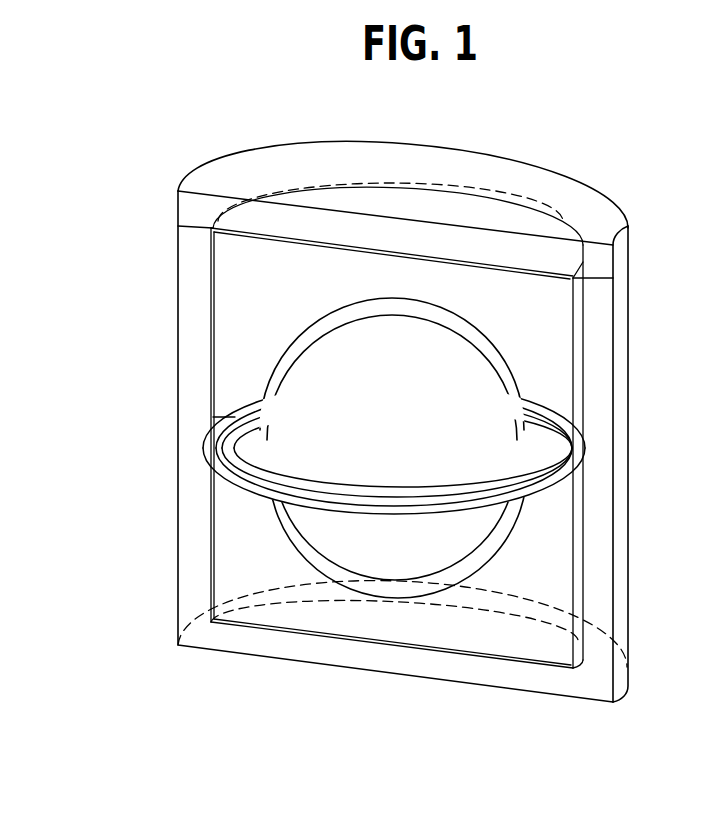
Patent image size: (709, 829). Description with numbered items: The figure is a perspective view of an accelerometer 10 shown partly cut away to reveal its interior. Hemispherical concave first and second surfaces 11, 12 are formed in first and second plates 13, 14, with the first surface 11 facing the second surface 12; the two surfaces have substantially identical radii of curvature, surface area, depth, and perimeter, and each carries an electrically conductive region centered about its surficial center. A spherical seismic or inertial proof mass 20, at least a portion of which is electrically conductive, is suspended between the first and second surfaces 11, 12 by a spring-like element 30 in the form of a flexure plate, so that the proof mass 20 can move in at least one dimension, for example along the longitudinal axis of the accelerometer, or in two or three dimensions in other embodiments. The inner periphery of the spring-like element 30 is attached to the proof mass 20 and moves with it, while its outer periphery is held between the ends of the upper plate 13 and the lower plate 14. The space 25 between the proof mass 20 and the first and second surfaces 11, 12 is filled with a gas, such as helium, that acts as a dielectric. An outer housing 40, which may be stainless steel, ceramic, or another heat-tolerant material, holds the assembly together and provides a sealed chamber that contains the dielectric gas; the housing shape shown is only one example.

The accelerometer 10 is at (212, 150).
The first surface 11 is at (318, 325).
The second surface 12 is at (440, 582).
The first plate 13 is at (372, 222).
The second plate 14 is at (230, 612).
The proof mass 20 is at (455, 387).
The space 25 is at (403, 600).
The spring-like element 30 is at (203, 448).
The outer housing 40 is at (178, 363).